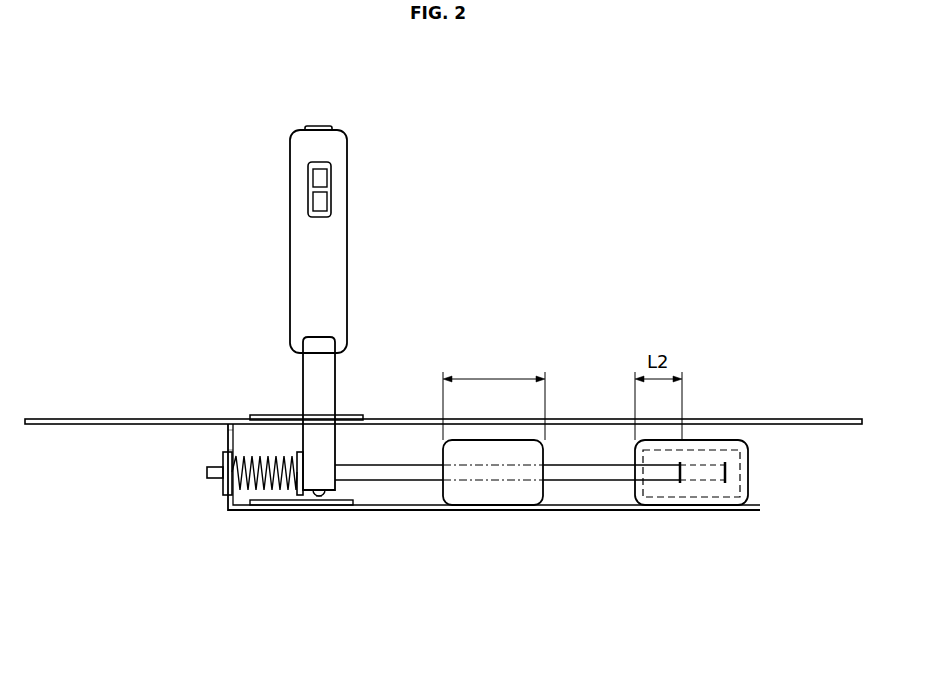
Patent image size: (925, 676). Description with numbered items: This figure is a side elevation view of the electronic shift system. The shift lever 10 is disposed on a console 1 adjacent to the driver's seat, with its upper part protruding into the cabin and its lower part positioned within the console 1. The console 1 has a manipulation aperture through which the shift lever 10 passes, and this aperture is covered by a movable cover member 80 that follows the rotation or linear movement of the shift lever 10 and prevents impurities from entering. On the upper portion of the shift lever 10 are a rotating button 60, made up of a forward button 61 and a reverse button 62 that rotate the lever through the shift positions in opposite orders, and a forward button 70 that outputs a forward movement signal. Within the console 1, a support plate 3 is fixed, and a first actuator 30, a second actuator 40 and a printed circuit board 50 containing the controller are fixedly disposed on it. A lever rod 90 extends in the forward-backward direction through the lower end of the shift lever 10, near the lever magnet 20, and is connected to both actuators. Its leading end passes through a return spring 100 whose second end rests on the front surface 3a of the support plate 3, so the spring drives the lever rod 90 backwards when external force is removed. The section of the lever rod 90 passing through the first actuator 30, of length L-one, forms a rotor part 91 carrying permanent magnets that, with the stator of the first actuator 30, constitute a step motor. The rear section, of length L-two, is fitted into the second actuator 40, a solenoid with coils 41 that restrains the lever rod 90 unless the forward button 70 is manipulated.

The console 1 is at (92, 419).
The support plate 3 is at (424, 510).
The front surface of the support plate 3a is at (228, 440).
The shift lever 10 is at (292, 258).
The lever magnet 20 is at (320, 500).
The first actuator 30 is at (500, 492).
The second actuator 40 is at (749, 469).
The coils 41 is at (716, 440).
The printed circuit board 50 is at (356, 500).
The rotating button 60 is at (416, 163).
The forward button 61 is at (327, 178).
The reverse button 62 is at (327, 204).
The forward button 70 is at (313, 126).
The cover member 80 is at (257, 415).
The lever rod 90 is at (586, 479).
The rotor part 91 is at (494, 394).
The return spring 100 is at (264, 492).